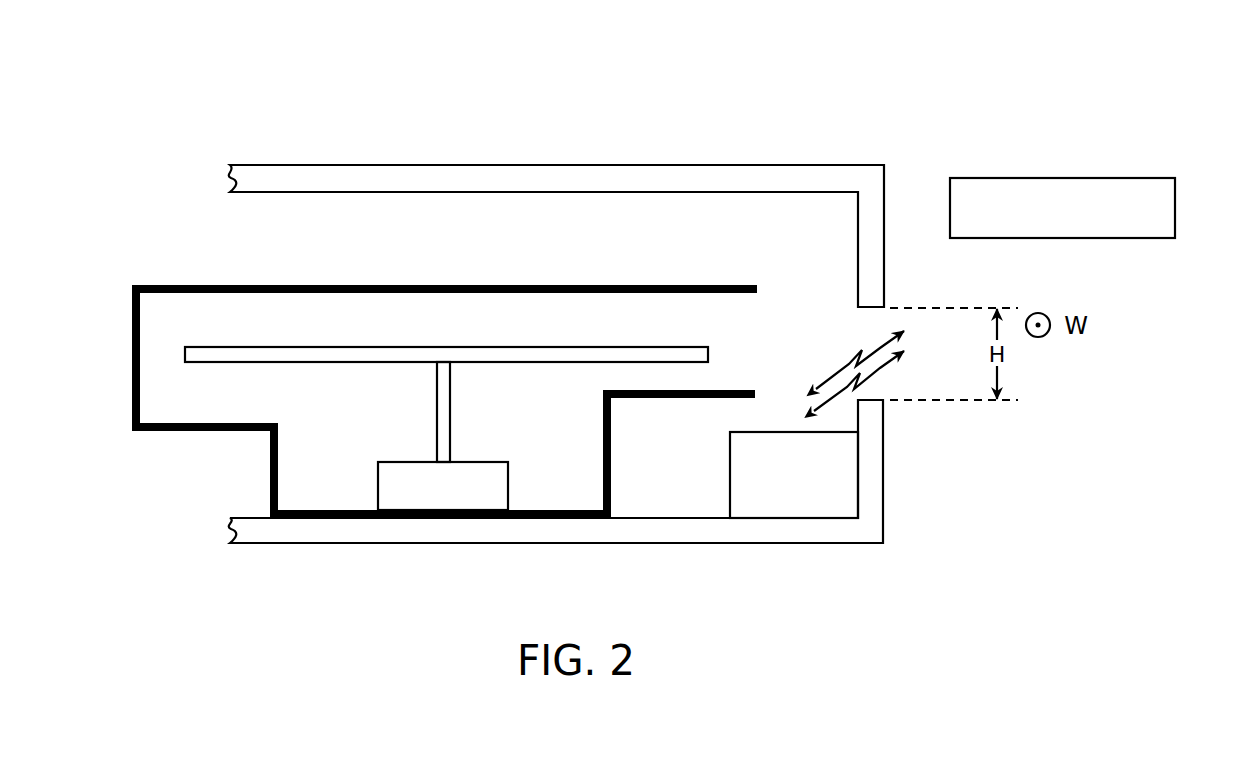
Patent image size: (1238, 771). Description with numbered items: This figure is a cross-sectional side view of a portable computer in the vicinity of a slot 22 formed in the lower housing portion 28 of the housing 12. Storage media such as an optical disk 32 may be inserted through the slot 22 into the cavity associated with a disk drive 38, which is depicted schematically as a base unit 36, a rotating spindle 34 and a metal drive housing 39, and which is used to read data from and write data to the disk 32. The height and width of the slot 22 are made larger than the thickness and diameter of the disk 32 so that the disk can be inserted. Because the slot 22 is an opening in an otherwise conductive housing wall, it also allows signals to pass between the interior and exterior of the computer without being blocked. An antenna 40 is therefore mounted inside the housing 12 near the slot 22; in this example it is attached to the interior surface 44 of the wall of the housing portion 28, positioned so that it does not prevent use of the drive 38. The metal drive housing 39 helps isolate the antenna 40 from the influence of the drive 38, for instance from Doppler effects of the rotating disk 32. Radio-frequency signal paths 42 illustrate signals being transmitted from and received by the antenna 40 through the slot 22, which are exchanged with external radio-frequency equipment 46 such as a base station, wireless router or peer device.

The housing 12 is at (923, 65).
The slot 22 is at (886, 322).
The lower housing portion 28 is at (795, 165).
The optical disk 32 is at (541, 347).
The rotating spindle 34 is at (452, 397).
The base unit 36 is at (497, 451).
The disk drive 38 is at (395, 378).
The metal drive housing 39 is at (455, 284).
The antenna 40 is at (845, 472).
The radio-frequency signal paths 42 is at (846, 380).
The interior surface 44 is at (858, 405).
The radio-frequency equipment 46 is at (1061, 178).